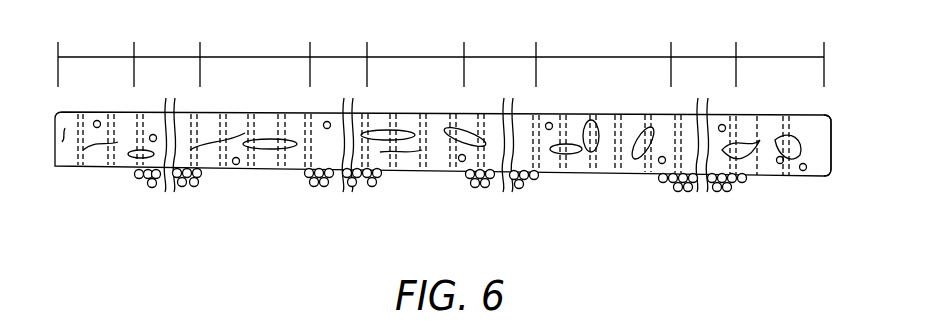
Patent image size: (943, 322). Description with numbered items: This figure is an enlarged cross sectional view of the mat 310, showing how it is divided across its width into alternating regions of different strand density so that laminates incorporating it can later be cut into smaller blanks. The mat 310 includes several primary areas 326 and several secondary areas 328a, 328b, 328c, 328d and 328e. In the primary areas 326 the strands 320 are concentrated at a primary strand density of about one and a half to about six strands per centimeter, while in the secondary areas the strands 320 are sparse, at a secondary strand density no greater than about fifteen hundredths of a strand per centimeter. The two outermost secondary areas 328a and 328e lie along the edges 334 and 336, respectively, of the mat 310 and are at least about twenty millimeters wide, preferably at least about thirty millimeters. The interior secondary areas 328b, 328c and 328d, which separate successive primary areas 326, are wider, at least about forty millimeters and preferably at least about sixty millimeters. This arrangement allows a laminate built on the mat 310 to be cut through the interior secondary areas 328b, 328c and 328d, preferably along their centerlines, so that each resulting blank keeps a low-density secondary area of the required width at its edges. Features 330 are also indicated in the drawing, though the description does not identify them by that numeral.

The mat 310 is at (108, 190).
The strands 320 is at (199, 183).
The primary areas 326 is at (162, 56).
The secondary area 328a is at (90, 56).
The interior secondary area 328b is at (250, 56).
The interior secondary area 328c is at (418, 56).
The interior secondary area 328d is at (600, 56).
The secondary area 328e is at (777, 56).
The perforation lines 330 is at (267, 168).
The edge 334 is at (55, 134).
The edge 336 is at (852, 150).